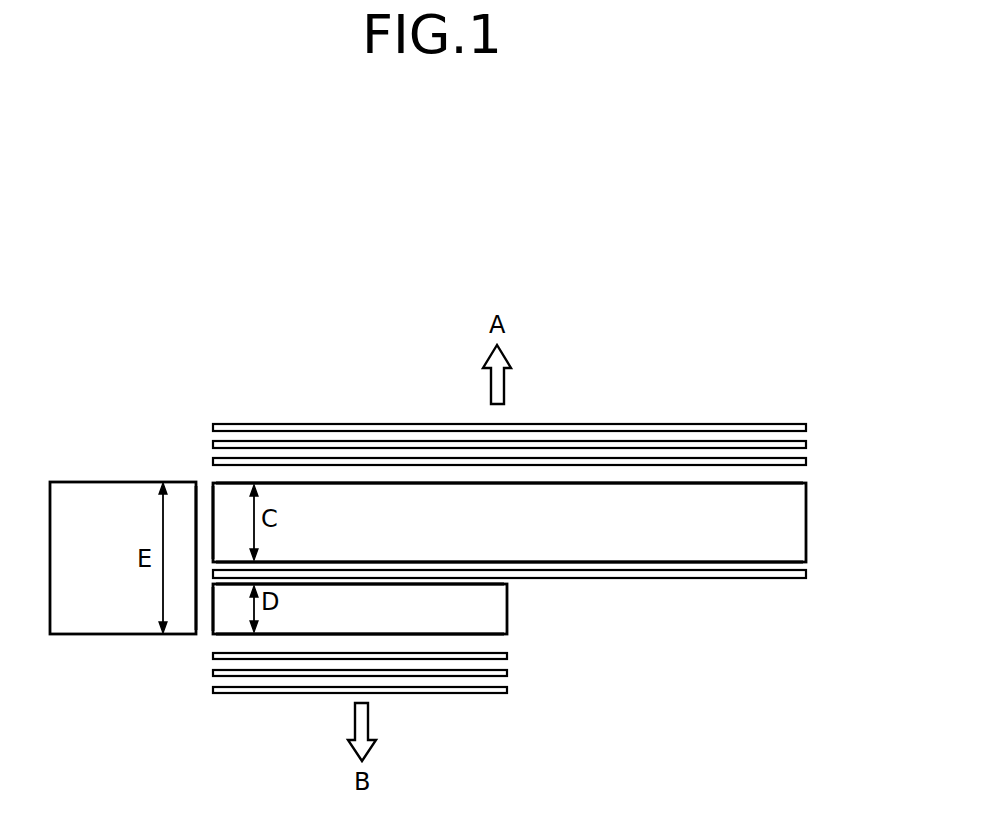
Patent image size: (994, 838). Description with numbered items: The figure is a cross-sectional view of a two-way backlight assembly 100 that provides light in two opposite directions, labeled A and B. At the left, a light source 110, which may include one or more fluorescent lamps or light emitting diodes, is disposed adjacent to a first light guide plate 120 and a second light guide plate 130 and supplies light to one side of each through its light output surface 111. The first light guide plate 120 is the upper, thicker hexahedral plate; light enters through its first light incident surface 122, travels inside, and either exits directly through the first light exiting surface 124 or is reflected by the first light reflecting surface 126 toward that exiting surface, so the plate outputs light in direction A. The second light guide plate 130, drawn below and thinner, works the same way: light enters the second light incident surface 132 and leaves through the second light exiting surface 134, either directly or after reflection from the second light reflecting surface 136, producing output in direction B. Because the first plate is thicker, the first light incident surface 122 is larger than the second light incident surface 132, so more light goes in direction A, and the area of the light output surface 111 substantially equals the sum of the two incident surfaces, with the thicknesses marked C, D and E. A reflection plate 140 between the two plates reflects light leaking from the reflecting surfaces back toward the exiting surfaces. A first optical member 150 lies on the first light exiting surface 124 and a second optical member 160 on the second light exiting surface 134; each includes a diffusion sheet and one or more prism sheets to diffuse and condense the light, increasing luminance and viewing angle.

The backlight assembly 100 is at (505, 246).
The light source 110 is at (88, 612).
The light output surface 111 is at (193, 520).
The first light guide plate 120 is at (818, 515).
The first light incident surface 122 is at (213, 497).
The first light exiting surface 124 is at (788, 483).
The first light reflecting surface 126 is at (788, 562).
The second light guide plate 130 is at (520, 614).
The second light incident surface 132 is at (213, 634).
The second light exiting surface 134 is at (483, 634).
The second light reflecting surface 136 is at (483, 584).
The reflection plate 140 is at (800, 578).
The first optical member 150 is at (818, 424).
The second optical member 160 is at (515, 653).